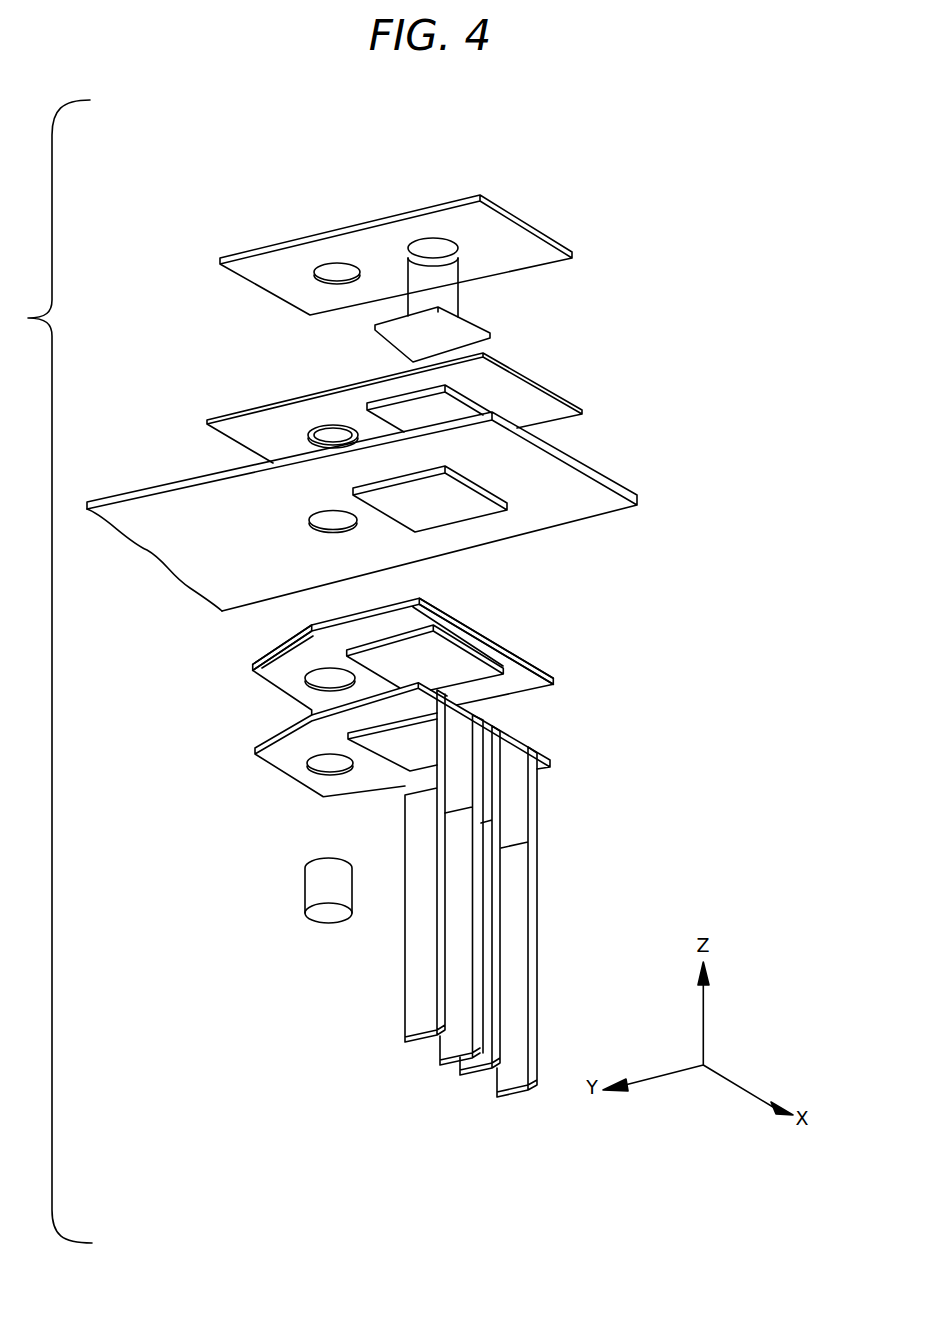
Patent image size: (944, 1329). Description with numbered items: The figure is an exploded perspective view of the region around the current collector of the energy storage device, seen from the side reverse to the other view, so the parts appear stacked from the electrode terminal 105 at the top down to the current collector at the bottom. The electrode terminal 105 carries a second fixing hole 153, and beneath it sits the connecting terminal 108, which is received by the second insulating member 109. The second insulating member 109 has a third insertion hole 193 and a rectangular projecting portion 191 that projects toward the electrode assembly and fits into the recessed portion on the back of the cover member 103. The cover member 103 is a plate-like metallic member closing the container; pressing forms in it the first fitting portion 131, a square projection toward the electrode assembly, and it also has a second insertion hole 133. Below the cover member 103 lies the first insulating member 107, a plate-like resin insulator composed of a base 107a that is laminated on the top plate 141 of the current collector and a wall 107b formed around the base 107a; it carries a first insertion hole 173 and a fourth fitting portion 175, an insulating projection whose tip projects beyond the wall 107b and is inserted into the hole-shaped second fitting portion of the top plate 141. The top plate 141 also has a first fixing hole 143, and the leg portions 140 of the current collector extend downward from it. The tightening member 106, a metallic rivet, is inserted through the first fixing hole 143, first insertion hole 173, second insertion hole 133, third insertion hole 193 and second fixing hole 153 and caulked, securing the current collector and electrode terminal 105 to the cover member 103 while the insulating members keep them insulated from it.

The cover member 103 is at (641, 495).
The electrode terminal 105 is at (572, 253).
The tightening member 106 is at (305, 883).
The first insulating member 107 is at (513, 652).
The base 107a is at (293, 655).
The wall 107b is at (556, 686).
The connecting terminal 108 is at (448, 298).
The second insulating member 109 is at (571, 403).
The first fitting portion 131 is at (482, 508).
The second insertion hole 133 is at (330, 517).
The terminal pins 140 is at (538, 936).
The top plate 141 is at (256, 750).
The first fixing hole 143 is at (326, 772).
The second fixing hole 153 is at (326, 278).
The first insertion hole 173 is at (322, 678).
The fourth fitting portion 175 is at (470, 667).
The projecting portion 191 is at (440, 410).
The third insertion hole 193 is at (330, 438).